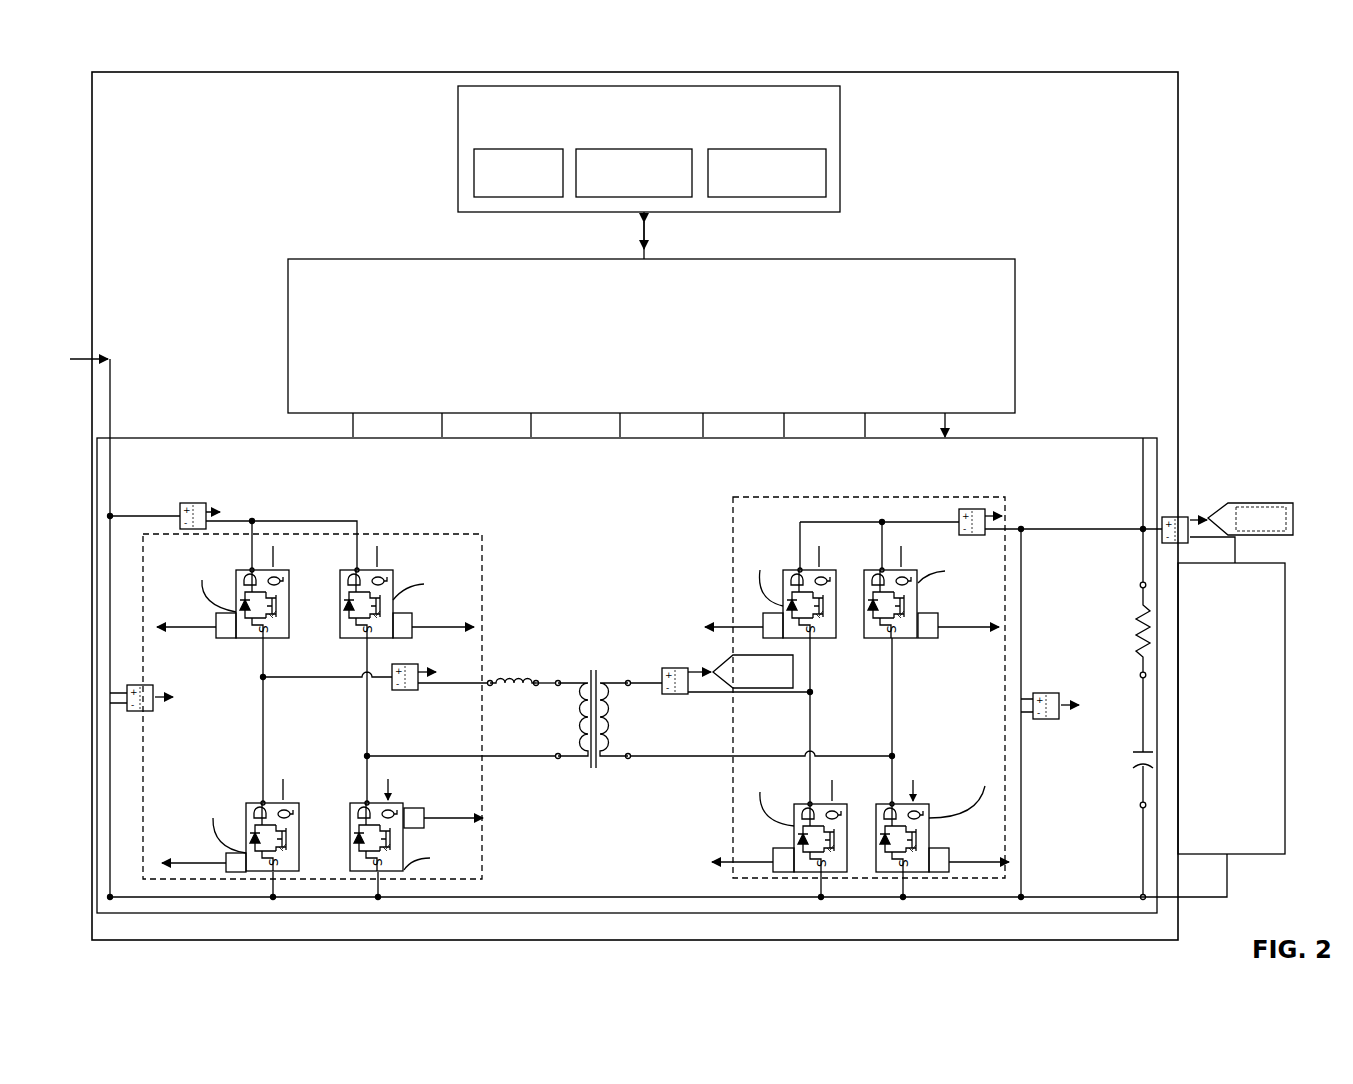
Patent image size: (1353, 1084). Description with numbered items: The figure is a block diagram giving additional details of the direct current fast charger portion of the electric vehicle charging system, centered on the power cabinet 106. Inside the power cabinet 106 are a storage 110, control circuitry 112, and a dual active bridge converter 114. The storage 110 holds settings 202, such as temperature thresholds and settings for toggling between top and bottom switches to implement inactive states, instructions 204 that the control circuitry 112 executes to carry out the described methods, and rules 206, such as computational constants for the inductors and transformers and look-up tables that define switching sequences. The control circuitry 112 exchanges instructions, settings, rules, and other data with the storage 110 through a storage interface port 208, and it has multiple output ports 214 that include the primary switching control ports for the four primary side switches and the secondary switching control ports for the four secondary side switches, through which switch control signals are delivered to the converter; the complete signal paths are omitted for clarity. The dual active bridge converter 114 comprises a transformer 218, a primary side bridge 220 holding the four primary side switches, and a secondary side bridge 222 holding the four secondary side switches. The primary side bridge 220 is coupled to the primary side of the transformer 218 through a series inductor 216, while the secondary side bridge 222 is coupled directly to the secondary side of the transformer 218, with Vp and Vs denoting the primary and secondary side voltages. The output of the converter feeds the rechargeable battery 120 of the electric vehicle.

The power cabinet 106 is at (158, 72).
The storage 110 is at (458, 152).
The control circuitry 112 is at (355, 259).
The dual active bridge converter 114 is at (215, 438).
The rechargeable battery 120 is at (1258, 857).
The settings 202 is at (538, 149).
The instructions 204 is at (645, 149).
The rules 206 is at (775, 149).
The storage interface port 208 is at (642, 234).
The output ports 214 is at (515, 373).
The series inductor 216 is at (512, 669).
The transformer 218 is at (593, 663).
The primary side bridge 220 is at (410, 538).
The secondary side bridge 222 is at (800, 497).